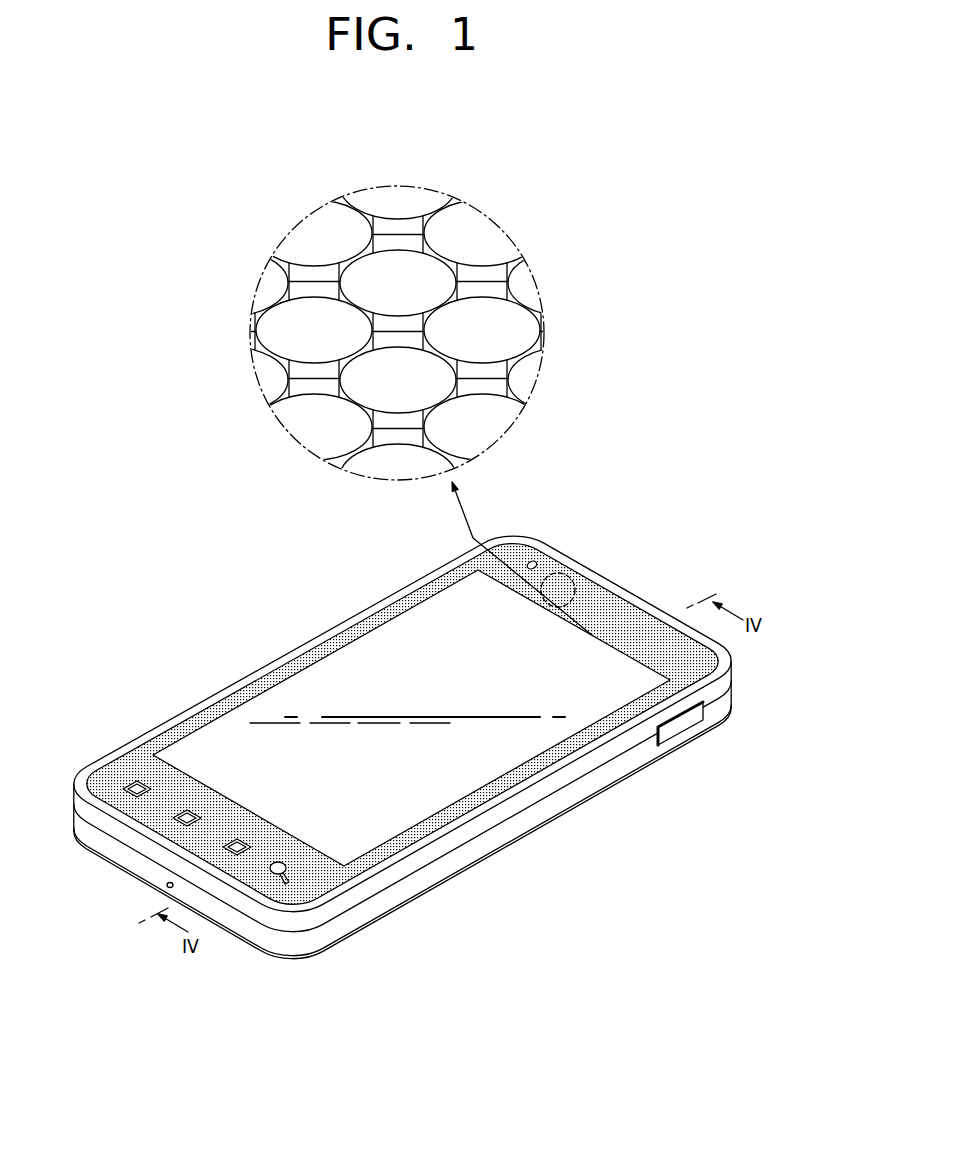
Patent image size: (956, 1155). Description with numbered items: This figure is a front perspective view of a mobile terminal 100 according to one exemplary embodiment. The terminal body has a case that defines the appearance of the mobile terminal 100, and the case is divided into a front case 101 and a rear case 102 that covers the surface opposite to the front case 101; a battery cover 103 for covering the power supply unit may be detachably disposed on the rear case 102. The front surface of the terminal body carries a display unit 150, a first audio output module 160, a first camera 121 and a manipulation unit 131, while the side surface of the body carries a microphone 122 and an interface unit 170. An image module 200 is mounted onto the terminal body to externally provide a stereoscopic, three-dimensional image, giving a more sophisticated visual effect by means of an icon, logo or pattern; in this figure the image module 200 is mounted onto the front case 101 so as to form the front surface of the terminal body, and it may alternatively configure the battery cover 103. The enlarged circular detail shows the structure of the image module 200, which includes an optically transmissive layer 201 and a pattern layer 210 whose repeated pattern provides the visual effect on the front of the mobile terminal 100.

The mobile terminal 100 is at (438, 735).
The front case 101 is at (725, 681).
The rear case 102 is at (727, 702).
The battery cover 103 is at (728, 712).
The first camera 121 is at (536, 563).
The microphone 122 is at (165, 888).
The manipulation unit 131 is at (296, 875).
The display unit 150 is at (342, 665).
The first audio output module 160 is at (622, 596).
The interface unit 170 is at (683, 731).
The image module 200 is at (398, 396).
The optically transmissive layer 201 is at (495, 290).
The pattern layer 210 is at (527, 327).